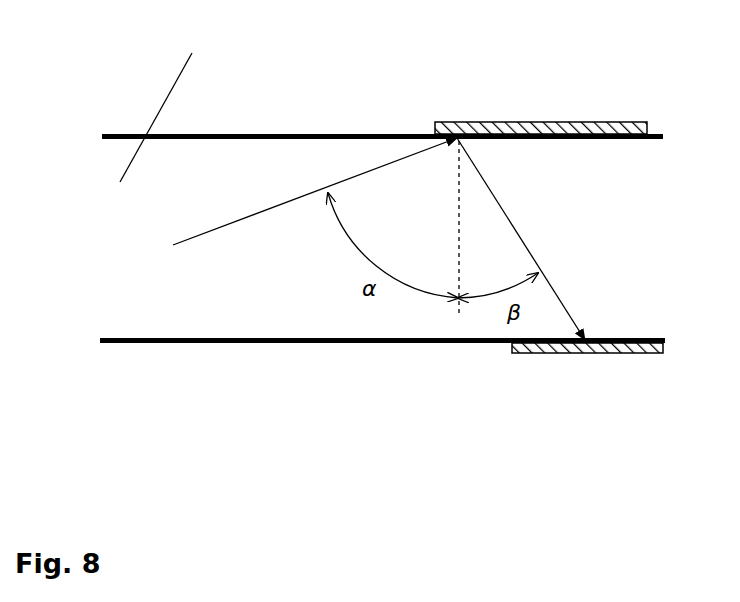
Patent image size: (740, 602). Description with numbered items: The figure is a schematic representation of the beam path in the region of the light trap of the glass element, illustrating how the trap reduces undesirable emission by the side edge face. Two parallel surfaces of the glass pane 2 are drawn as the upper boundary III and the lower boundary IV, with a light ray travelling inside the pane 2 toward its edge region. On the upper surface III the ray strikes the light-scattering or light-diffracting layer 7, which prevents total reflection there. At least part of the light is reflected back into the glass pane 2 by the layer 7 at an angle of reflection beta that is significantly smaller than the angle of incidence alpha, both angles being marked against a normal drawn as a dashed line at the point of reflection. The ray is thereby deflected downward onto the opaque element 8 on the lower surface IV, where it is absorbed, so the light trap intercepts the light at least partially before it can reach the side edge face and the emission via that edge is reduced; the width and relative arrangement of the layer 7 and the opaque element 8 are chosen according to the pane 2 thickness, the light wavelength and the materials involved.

The glass pane 2 is at (163, 105).
The light-scattering or light-diffracting layer 7 is at (563, 130).
The opaque element 8 is at (557, 353).
The upper substrate III is at (112, 134).
The lower substrate IV is at (113, 346).